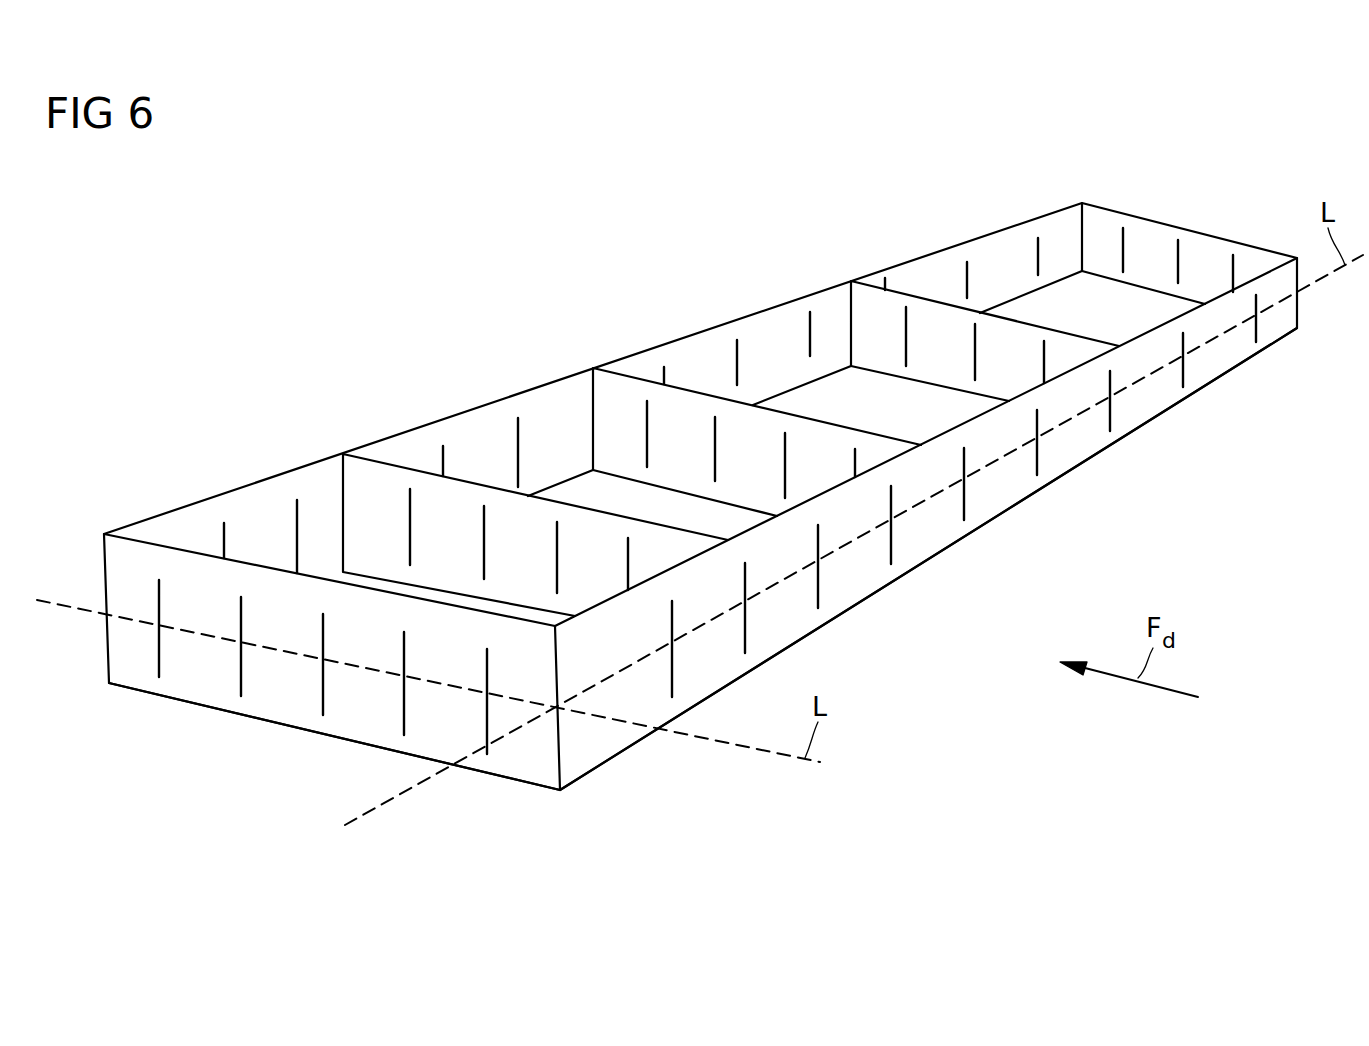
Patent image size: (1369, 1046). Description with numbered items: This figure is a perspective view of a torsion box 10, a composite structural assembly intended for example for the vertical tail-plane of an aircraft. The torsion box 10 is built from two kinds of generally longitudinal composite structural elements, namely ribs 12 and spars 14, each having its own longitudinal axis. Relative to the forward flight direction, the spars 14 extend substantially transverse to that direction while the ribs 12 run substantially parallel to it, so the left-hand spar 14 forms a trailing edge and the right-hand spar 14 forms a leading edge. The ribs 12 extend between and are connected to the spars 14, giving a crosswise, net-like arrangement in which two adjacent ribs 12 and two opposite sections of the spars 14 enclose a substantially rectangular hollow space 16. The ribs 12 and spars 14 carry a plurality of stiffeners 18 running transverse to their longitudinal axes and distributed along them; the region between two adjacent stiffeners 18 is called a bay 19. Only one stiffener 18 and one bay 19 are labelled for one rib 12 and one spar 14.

The torsion box 10 is at (697, 445).
The rib 12 is at (380, 487).
The spar 14 is at (180, 525).
The hollow space 16 is at (330, 405).
The stiffener 18 is at (240, 688).
The bay 19 is at (293, 697).